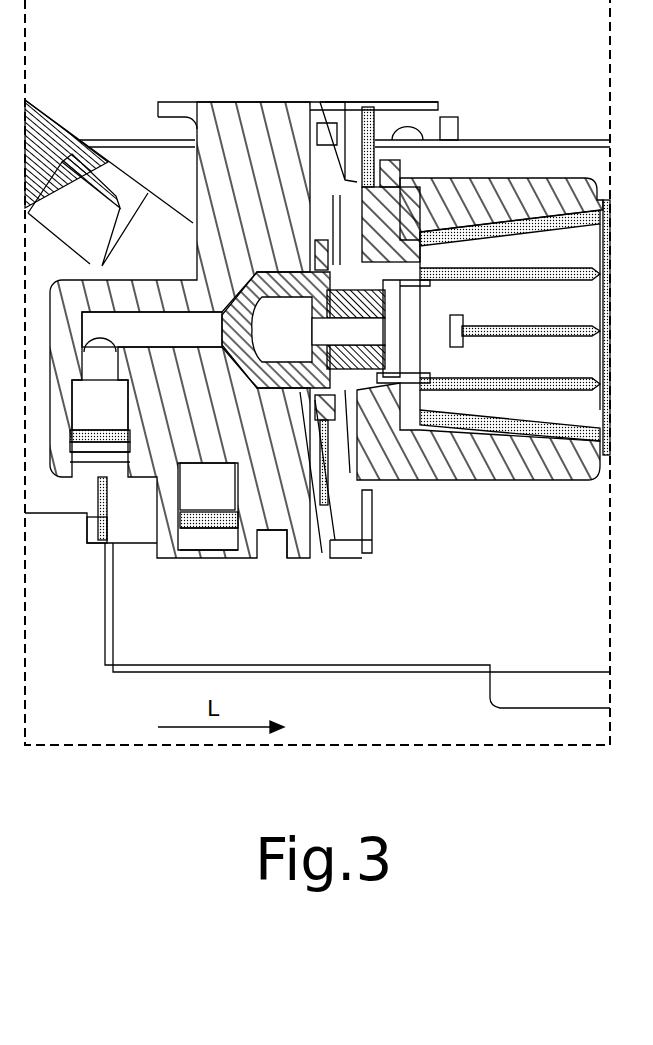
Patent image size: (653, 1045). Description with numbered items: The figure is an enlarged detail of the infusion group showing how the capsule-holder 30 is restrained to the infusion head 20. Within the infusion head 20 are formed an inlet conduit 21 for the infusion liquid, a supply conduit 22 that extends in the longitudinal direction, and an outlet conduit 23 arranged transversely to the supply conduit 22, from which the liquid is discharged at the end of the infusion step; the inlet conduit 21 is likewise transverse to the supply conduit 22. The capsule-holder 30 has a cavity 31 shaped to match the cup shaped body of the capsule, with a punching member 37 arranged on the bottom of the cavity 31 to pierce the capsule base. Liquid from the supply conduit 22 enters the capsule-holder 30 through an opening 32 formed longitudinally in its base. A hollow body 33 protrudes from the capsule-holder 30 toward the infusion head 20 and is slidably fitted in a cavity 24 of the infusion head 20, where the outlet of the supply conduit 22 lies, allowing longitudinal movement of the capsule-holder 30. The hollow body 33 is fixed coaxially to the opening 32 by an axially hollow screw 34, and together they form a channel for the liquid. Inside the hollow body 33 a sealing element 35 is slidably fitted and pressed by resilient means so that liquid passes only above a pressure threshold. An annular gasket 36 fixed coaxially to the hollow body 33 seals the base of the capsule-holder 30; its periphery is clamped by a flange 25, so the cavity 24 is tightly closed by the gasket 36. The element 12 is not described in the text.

The intake pipe 12 is at (60, 123).
The infusion head 20 is at (220, 117).
The inlet conduit 21 is at (114, 414).
The supply conduit 22 is at (164, 336).
The outlet conduit 23 is at (221, 502).
The cavity 24 is at (240, 360).
The flange 25 is at (360, 135).
The capsule-holder 30 is at (545, 180).
The cavity 31 is at (522, 368).
The opening 32 is at (393, 325).
The hollow body 33 is at (297, 272).
The axially hollow screw 34 is at (398, 487).
The sealing element 35 is at (299, 343).
The gasket 36 is at (340, 135).
The punching member 37 is at (413, 260).